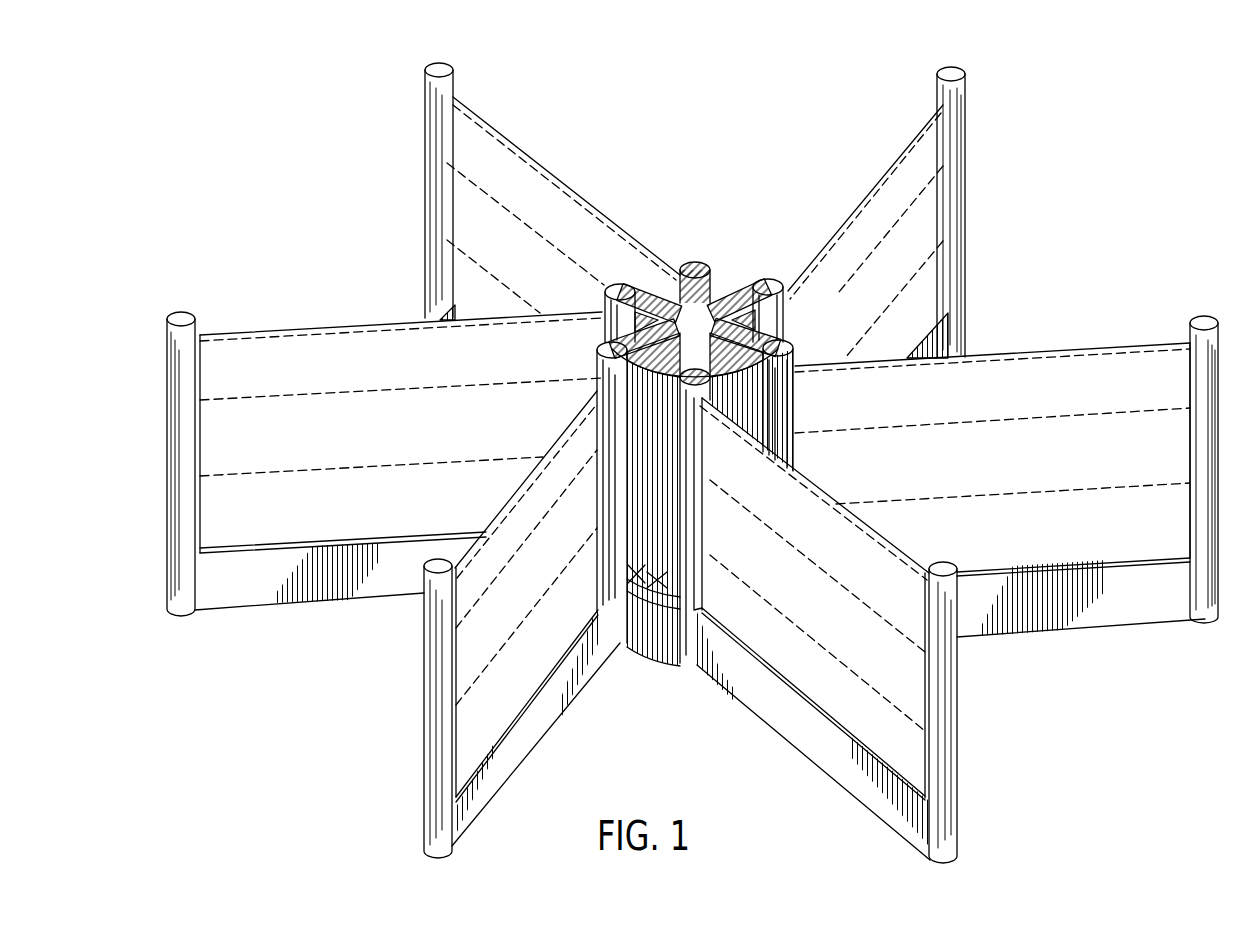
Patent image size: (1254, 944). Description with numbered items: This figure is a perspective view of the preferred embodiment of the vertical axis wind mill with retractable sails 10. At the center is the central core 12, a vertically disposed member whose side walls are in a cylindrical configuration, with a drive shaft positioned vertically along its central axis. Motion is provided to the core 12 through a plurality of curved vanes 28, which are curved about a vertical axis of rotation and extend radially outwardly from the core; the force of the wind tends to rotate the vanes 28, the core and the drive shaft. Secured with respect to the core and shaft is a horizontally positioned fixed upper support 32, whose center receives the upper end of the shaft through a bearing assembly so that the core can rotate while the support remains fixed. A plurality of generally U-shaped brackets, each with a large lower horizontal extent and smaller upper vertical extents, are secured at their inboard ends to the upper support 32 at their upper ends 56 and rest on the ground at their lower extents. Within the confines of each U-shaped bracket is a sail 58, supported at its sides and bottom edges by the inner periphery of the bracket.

The vertical axis wind mill with retractable sails 10 is at (730, 208).
The central core 12 is at (765, 327).
The curved vanes 28 is at (672, 602).
The fixed upper support 32 is at (707, 300).
The upper ends 56 is at (604, 303).
The sail 58 is at (905, 247).